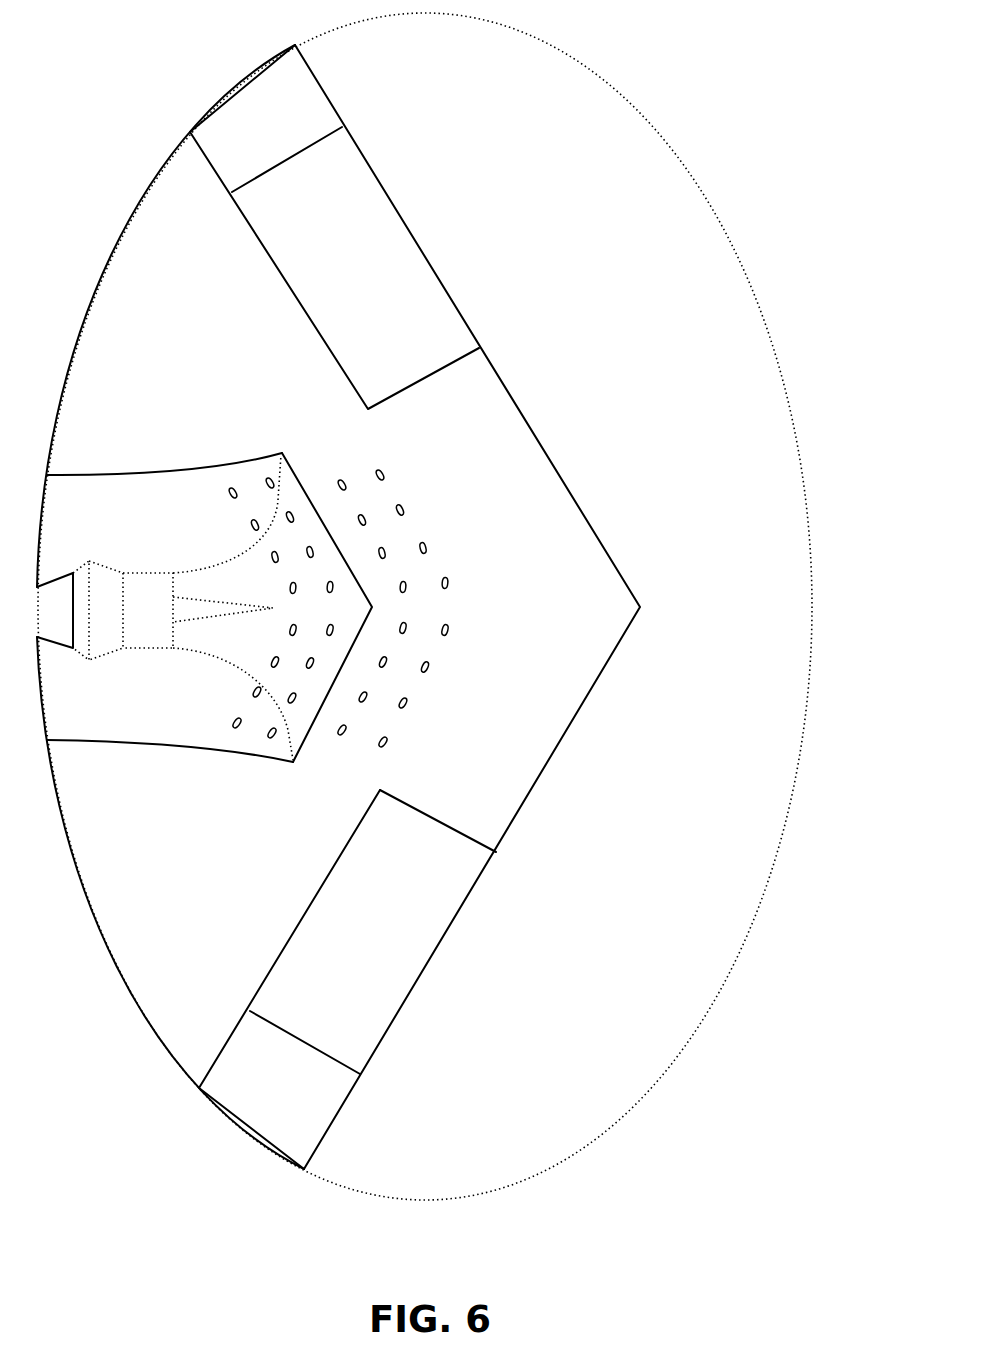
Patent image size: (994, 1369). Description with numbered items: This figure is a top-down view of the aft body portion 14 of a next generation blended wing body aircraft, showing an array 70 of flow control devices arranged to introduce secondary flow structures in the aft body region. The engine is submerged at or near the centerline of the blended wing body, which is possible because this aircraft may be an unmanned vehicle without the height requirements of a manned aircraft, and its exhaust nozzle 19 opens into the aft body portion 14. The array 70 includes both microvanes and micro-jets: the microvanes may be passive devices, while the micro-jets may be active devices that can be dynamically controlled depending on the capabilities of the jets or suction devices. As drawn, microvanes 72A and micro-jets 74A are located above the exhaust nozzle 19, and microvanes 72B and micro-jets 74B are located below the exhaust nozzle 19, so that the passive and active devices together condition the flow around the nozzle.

The aft body portion 14 is at (633, 112).
The exhaust nozzle 19 is at (281, 452).
The array of flow control devices 70 is at (190, 432).
The microvanes 72A is at (234, 490).
The microvanes 72B is at (339, 487).
The micro-jets 74A is at (272, 735).
The micro-jets 74B is at (383, 740).